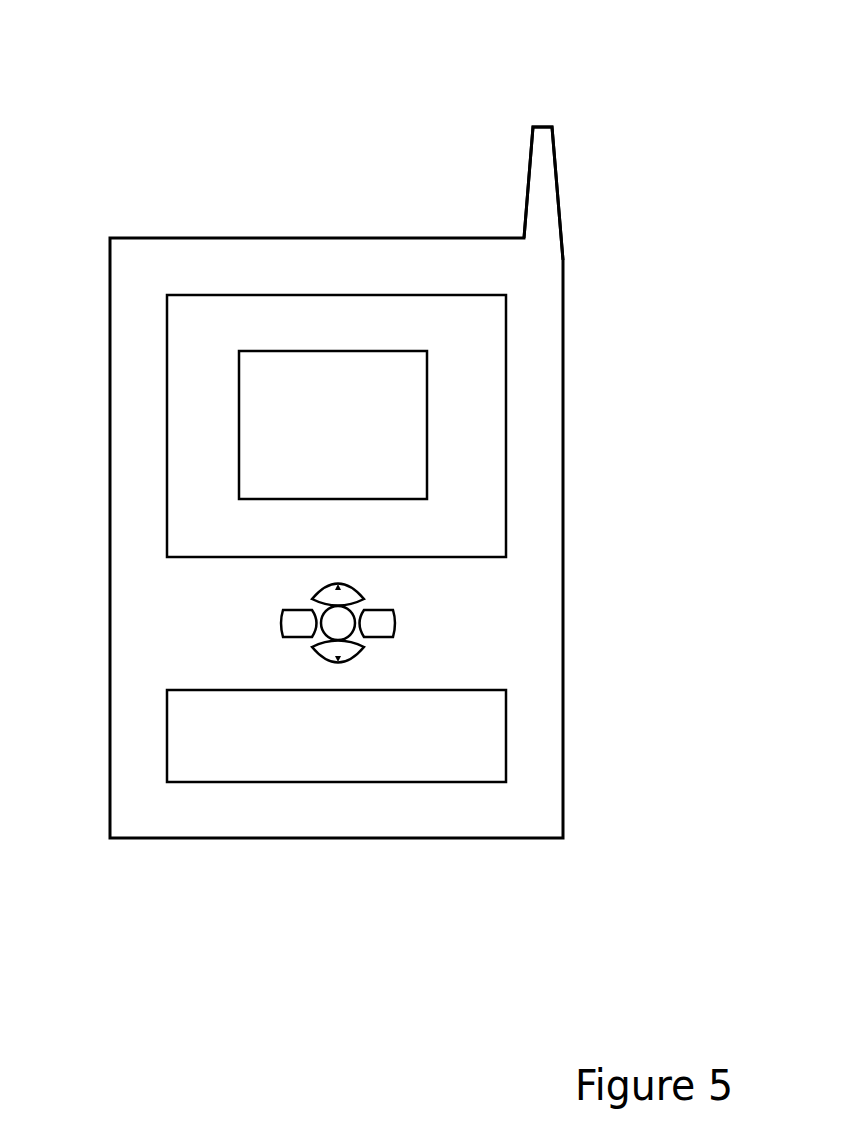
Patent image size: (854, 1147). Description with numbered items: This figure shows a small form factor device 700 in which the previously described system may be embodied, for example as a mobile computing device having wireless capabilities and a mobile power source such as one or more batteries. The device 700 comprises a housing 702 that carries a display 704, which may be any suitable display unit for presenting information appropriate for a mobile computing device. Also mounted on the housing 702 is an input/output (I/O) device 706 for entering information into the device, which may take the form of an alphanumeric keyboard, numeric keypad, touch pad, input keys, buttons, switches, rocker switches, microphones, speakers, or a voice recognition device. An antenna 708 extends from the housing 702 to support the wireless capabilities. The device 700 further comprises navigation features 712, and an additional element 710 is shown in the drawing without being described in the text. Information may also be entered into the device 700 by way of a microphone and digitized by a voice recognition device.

The small form factor device 700 is at (124, 68).
The housing 702 is at (566, 540).
The display 704 is at (509, 316).
The input/output (I/O) device 706 is at (509, 728).
The antenna 708 is at (525, 177).
The display window 710 is at (431, 449).
The navigation features 712 is at (410, 624).